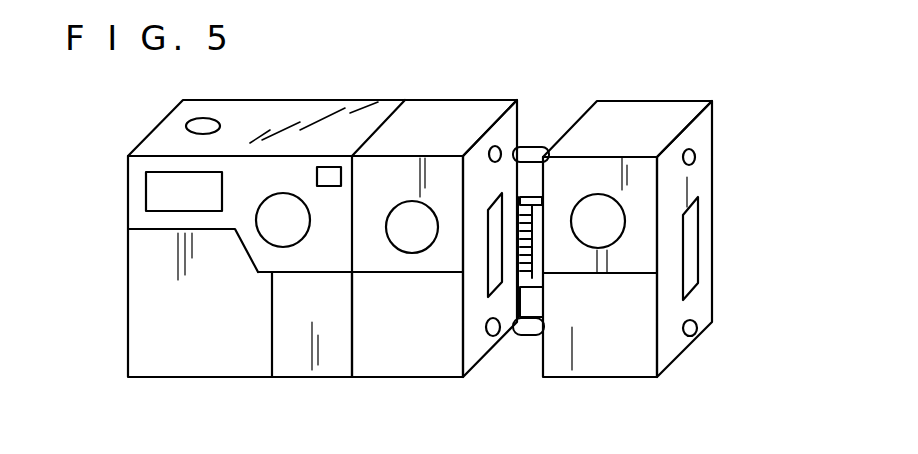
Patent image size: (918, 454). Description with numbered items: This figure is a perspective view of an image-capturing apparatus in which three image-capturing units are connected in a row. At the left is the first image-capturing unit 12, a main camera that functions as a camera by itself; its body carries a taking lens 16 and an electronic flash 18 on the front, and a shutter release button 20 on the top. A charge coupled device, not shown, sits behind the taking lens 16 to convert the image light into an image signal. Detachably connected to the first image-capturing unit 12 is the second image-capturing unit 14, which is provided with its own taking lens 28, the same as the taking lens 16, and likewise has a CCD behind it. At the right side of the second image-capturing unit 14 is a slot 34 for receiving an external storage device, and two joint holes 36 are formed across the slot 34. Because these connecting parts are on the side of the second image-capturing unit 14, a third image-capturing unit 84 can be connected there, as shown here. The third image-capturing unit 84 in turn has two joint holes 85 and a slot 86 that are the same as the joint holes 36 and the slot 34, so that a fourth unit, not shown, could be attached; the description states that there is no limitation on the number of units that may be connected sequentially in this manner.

The first image-capturing unit 12 is at (170, 311).
The second image-capturing unit 14 is at (381, 355).
The taking lens 16 is at (278, 232).
The electronic flash 18 is at (158, 193).
The shutter release button 20 is at (187, 128).
The taking lens 28 is at (400, 240).
The slot 34 is at (497, 291).
The joint holes 36 is at (499, 149).
The third image-capturing unit 84 is at (628, 120).
The joint holes 85 is at (695, 151).
The slot 86 is at (690, 248).